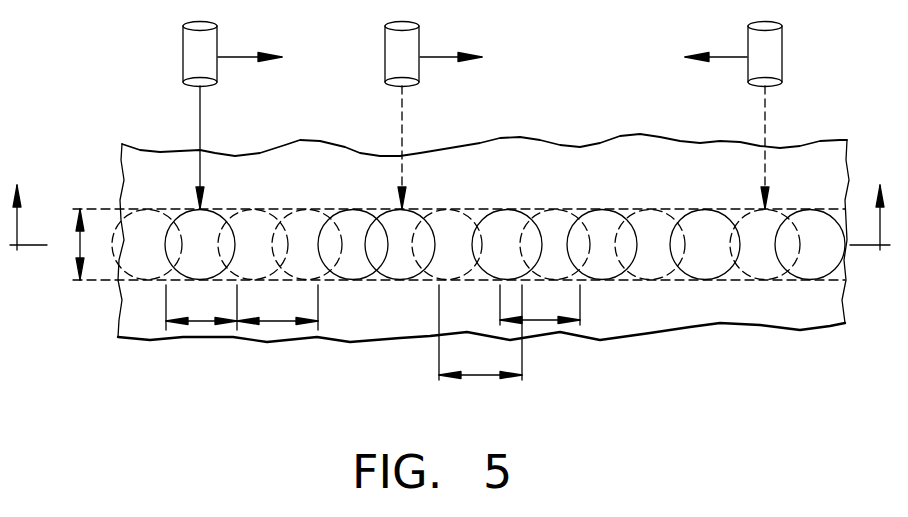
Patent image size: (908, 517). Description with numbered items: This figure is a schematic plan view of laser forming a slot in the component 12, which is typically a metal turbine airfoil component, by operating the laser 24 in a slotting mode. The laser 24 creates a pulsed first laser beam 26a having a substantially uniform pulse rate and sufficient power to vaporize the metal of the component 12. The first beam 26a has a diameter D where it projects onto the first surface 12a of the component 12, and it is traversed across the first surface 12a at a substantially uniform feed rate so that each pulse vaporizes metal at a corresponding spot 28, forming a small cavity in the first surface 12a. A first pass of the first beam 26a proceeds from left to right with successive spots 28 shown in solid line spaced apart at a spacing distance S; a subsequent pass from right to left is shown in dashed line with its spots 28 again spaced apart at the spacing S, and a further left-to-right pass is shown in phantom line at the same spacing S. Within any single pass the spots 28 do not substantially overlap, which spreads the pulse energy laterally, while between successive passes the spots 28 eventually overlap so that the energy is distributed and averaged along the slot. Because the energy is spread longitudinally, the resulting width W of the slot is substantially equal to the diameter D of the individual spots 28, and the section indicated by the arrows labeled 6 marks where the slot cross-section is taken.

The component 12 is at (848, 142).
The first surface 12a is at (786, 157).
The laser 24 is at (385, 36).
The first laser beam 26a is at (200, 113).
The spot 28 is at (680, 273).
The section line 6- 6 is at (448, 202).
The width W is at (80, 245).
The diameter D is at (202, 322).
The spacing distance S is at (278, 322).